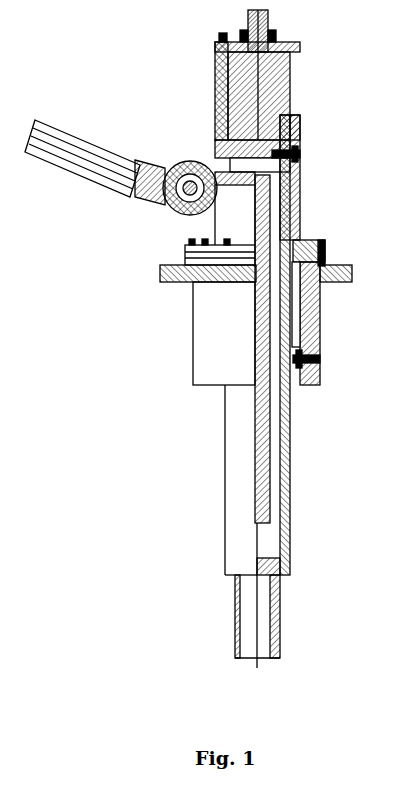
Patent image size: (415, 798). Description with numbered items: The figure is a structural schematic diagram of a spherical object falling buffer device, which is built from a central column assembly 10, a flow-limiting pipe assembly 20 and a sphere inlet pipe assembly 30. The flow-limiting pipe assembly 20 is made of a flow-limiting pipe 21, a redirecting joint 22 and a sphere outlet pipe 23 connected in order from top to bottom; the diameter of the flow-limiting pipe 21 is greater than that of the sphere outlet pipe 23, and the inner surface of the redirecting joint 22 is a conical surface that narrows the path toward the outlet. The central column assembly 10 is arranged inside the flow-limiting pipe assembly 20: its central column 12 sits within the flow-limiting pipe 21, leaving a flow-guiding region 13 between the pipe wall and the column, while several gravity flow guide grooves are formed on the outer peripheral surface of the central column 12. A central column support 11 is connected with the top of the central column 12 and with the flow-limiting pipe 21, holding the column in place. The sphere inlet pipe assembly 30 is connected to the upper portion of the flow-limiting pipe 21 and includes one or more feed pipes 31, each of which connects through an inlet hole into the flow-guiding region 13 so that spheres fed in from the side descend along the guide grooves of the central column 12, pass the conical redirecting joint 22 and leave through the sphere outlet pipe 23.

The central column assembly 10 is at (298, 115).
The central column support 11 is at (298, 148).
The central column 12 is at (265, 275).
The flow-guiding region 13 is at (273, 440).
The flow-limiting pipe assembly 20 is at (298, 185).
The flow-limiting pipe 21 is at (283, 418).
The redirecting joint 22 is at (283, 565).
The sphere outlet pipe 23 is at (273, 624).
The sphere inlet pipe assembly 30 is at (200, 155).
The feed pipe 31 is at (128, 162).